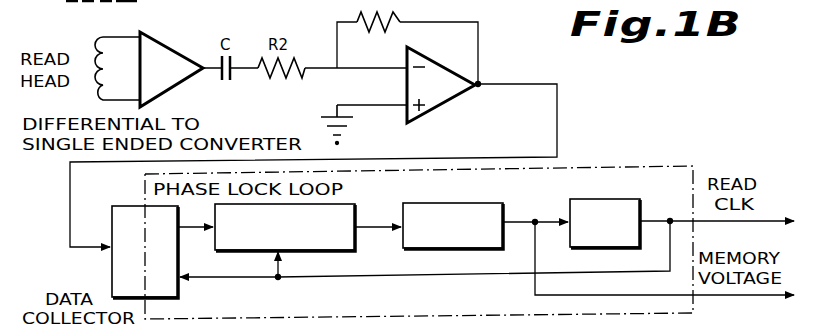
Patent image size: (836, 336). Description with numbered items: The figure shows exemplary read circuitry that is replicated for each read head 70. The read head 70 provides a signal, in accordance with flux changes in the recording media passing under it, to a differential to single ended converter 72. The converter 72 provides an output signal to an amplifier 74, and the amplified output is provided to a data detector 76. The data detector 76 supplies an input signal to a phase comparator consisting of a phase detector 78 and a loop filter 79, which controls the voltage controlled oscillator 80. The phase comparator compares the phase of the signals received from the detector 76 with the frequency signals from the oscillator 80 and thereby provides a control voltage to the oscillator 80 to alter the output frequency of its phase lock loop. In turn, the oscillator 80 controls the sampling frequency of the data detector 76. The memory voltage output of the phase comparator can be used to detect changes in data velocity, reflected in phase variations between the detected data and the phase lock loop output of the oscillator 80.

The read head 70 is at (96, 60).
The differential to single ended converter 72 is at (168, 40).
The amplifier 74 is at (330, 33).
The data detector 76 is at (174, 296).
The phase detector 78 is at (322, 254).
The loop filter 79 is at (455, 251).
The voltage controlled oscillator 80 is at (595, 250).